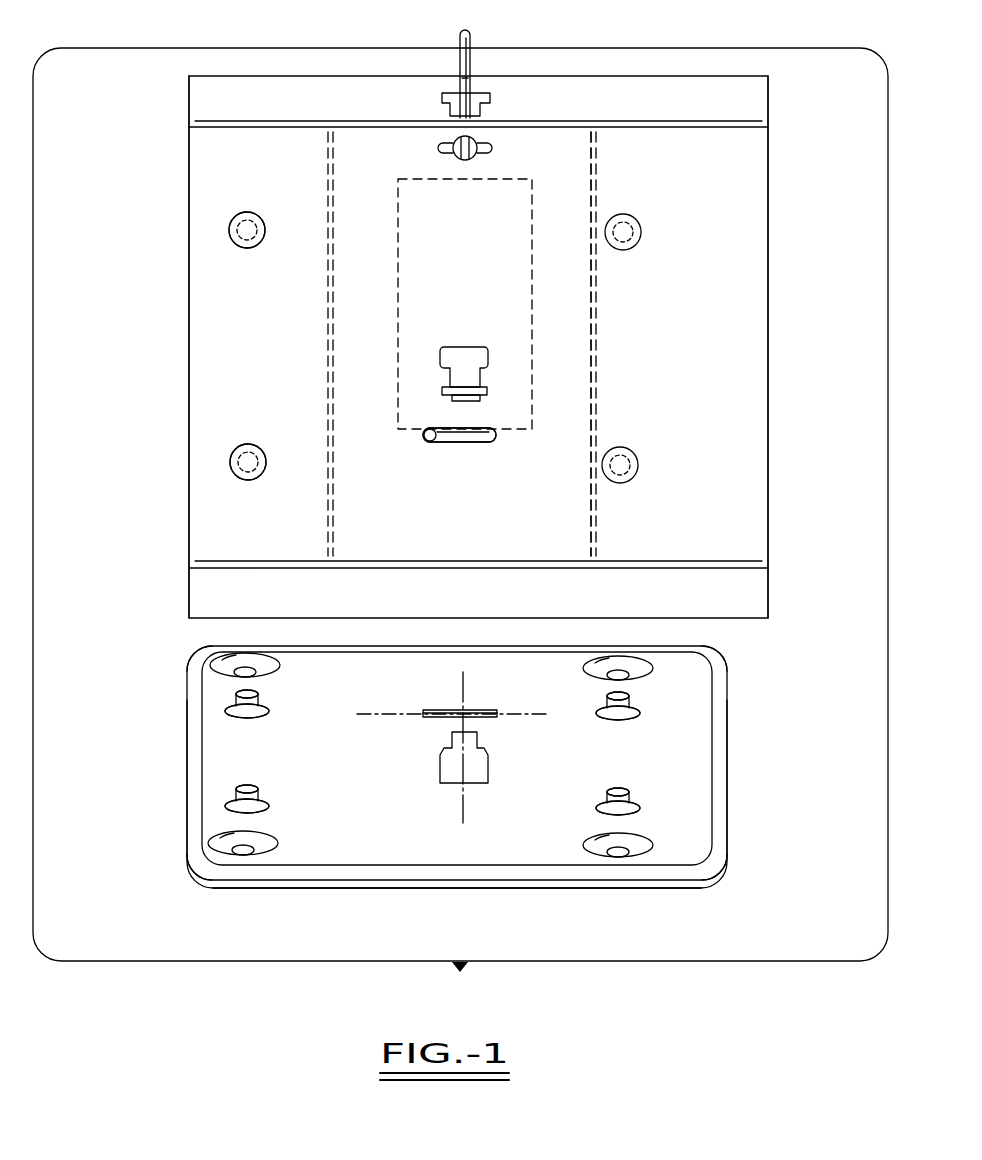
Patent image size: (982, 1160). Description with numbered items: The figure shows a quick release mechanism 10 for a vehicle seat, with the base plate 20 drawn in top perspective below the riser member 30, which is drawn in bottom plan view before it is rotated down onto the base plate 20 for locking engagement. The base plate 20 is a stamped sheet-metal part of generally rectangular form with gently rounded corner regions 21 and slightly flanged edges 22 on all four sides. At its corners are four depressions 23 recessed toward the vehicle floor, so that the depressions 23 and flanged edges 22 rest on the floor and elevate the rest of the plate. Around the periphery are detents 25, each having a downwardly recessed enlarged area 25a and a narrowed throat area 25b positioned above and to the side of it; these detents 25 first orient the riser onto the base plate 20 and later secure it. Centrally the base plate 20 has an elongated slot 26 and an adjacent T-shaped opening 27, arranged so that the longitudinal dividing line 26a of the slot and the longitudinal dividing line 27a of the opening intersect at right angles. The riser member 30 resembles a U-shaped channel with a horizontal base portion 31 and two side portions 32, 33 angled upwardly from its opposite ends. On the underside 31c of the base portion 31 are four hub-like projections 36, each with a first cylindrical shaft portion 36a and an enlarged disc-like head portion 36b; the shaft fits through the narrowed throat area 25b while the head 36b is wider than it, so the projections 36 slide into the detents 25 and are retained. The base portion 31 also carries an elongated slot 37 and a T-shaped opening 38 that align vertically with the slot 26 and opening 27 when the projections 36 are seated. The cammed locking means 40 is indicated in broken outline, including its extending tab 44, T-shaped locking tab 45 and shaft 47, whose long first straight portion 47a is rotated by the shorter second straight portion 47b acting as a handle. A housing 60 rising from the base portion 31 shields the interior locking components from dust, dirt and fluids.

The quick release mechanism 10 is at (752, 982).
The base plate 20 is at (178, 752).
The corner regions 21 is at (197, 654).
The flanged edges 22 is at (192, 822).
The depressions 23 is at (248, 668).
The detents 25 is at (222, 696).
The enlarged area 25a is at (236, 712).
The narrowed throat area 25b is at (252, 698).
The elongated slot 26 is at (426, 708).
The longitudinal dividing line 26a is at (530, 716).
The T-shaped opening 27 is at (443, 765).
The longitudinal dividing line 27a is at (463, 804).
The riser member 30 is at (180, 377).
The base portion 31 is at (180, 312).
The underside 31c is at (745, 316).
The side portion 32 is at (760, 97).
The side portion 33 is at (760, 598).
The hub-like projections 36 is at (218, 226).
The first cylindrical shaft portion 36a is at (236, 214).
The disc-like head portion 36b is at (238, 244).
The elongated slot 37 is at (428, 438).
The T-shaped opening 38 is at (448, 350).
The cammed locking means 40 is at (528, 318).
The extending tab 44 is at (451, 443).
The T-shaped locking tab 45 is at (432, 390).
The shaft 47 is at (485, 54).
The first straight portion 47a is at (460, 100).
The second straight portion 47b is at (462, 36).
The housing 60 is at (593, 379).